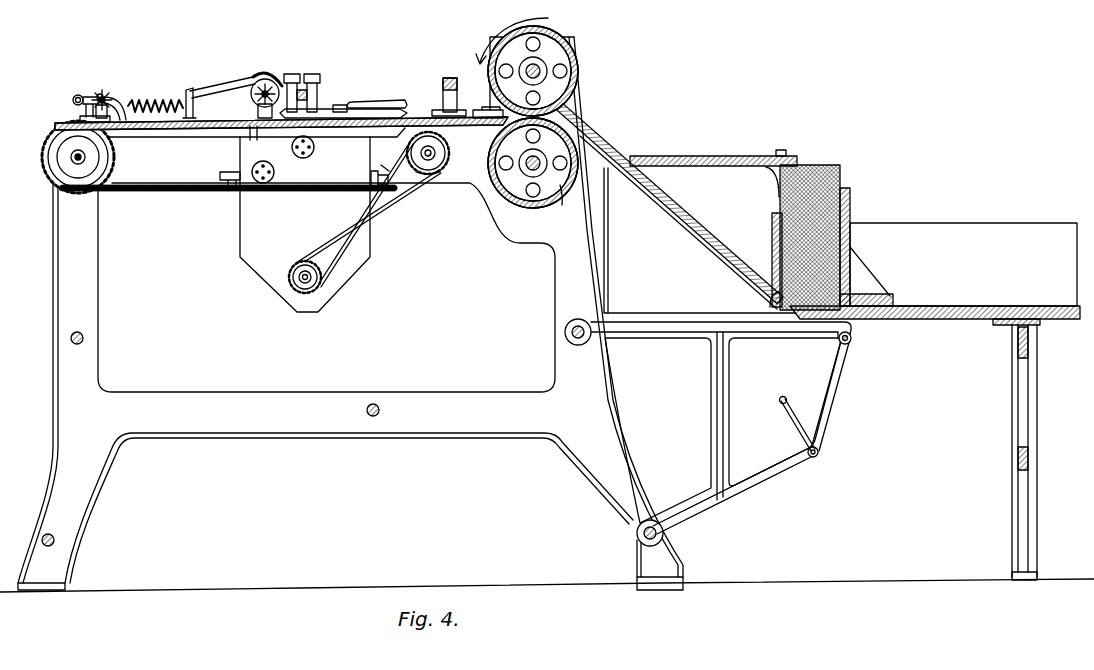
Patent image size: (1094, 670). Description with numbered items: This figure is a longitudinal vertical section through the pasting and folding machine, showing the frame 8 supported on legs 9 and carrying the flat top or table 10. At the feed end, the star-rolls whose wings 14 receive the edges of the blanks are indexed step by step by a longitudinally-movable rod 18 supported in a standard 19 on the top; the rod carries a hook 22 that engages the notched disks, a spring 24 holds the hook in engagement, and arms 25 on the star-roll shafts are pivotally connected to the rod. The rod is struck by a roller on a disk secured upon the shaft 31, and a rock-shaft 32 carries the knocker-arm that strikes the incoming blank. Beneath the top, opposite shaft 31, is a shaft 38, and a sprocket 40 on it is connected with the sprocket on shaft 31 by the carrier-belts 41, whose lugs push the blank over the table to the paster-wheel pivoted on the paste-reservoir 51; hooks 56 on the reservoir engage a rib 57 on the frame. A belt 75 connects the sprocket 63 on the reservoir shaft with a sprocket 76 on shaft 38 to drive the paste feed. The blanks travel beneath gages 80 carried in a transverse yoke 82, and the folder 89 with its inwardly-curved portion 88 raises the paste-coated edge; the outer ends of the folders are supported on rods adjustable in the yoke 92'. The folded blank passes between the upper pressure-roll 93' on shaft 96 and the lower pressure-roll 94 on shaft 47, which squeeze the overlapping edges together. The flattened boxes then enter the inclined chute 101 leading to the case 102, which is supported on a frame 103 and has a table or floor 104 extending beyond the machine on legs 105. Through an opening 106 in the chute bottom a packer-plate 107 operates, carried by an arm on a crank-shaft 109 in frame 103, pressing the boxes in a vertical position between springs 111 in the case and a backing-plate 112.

The frame 8 is at (326, 260).
The legs 9 is at (92, 478).
The flat top or table 10 is at (230, 120).
The flat plates or wings 14 is at (99, 93).
The longitudinally-movable rod 18 is at (233, 88).
The standard 19 is at (191, 87).
The hook 22 is at (282, 84).
The spring 24 is at (153, 100).
The arms 25 is at (108, 95).
The shaft 31 is at (84, 158).
The rock-shaft 32 is at (74, 98).
The shaft 38 is at (445, 153).
The sprocket 40 is at (96, 175).
The belts 41 is at (196, 191).
The shaft 47 is at (533, 178).
The paste-reservoir 51 is at (305, 224).
The hooks 56 is at (369, 178).
The rib 57 is at (385, 164).
The sprocket 63 is at (300, 285).
The belt 75 is at (398, 205).
The sprocket 76 is at (440, 177).
The gages 80 is at (322, 110).
The transverse yoke 82 is at (320, 88).
The inwardly-curved portion 88 is at (368, 104).
The folder 89 is at (340, 105).
The yoke 92' is at (439, 91).
The upper pressure-roll 93' is at (527, 59).
The lower pressure-roll 94 is at (563, 197).
The shaft 96 is at (548, 70).
The inclined chute 101 is at (608, 143).
The case 102 is at (700, 231).
The frame 103 is at (650, 332).
The table or floor 104 is at (968, 320).
The legs 105 is at (1020, 430).
The opening 106 is at (700, 257).
The packer-plate 107 is at (772, 226).
The crank-shaft 109 is at (796, 426).
The springs 111 is at (768, 173).
The backing-plate 112 is at (846, 214).